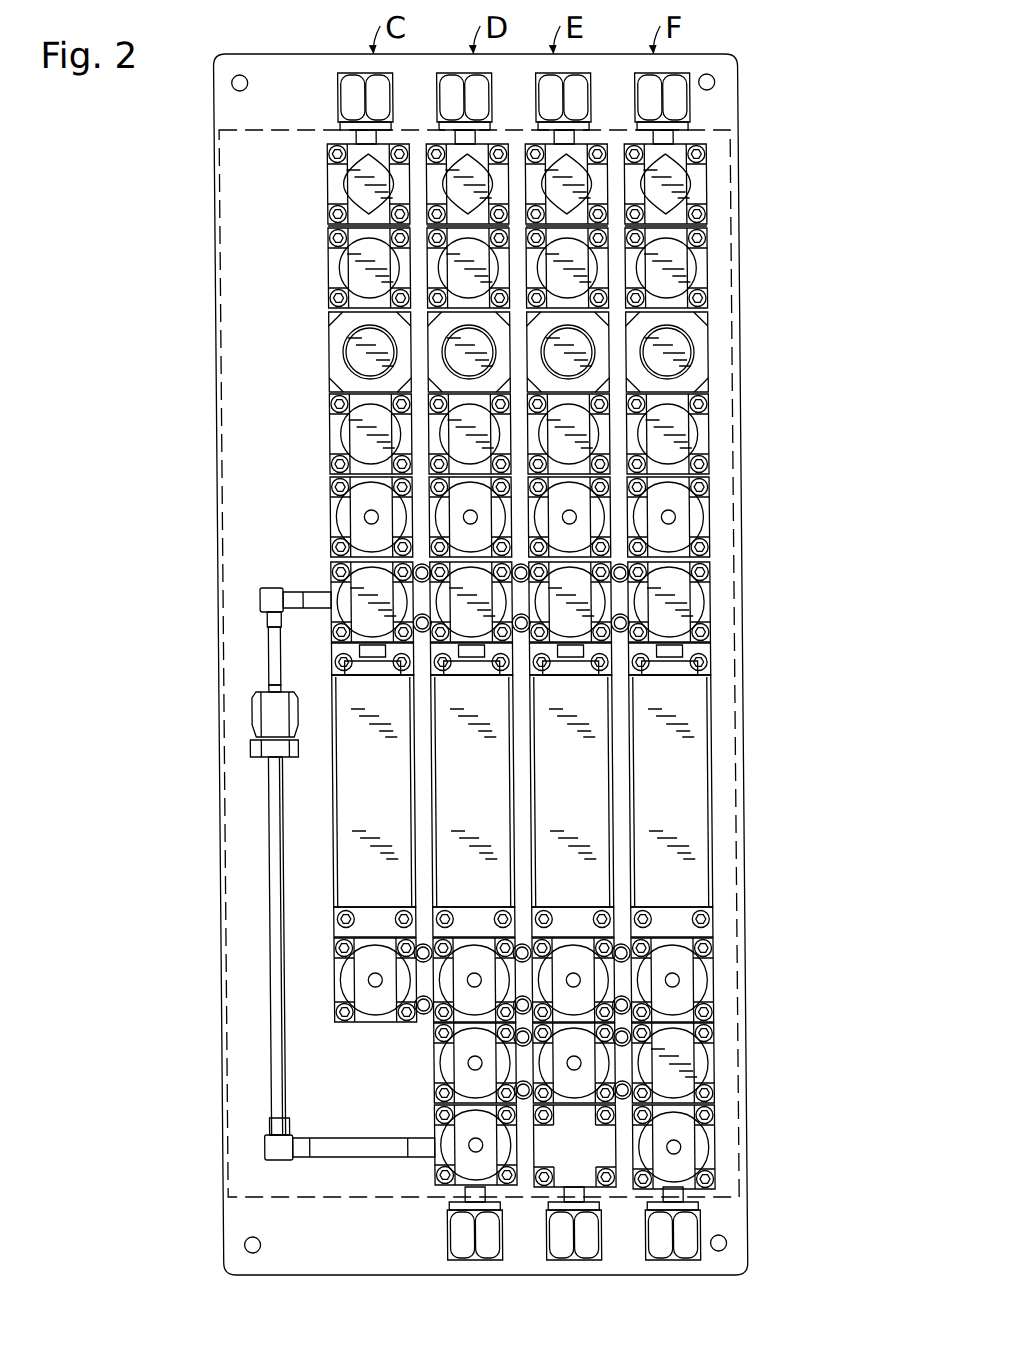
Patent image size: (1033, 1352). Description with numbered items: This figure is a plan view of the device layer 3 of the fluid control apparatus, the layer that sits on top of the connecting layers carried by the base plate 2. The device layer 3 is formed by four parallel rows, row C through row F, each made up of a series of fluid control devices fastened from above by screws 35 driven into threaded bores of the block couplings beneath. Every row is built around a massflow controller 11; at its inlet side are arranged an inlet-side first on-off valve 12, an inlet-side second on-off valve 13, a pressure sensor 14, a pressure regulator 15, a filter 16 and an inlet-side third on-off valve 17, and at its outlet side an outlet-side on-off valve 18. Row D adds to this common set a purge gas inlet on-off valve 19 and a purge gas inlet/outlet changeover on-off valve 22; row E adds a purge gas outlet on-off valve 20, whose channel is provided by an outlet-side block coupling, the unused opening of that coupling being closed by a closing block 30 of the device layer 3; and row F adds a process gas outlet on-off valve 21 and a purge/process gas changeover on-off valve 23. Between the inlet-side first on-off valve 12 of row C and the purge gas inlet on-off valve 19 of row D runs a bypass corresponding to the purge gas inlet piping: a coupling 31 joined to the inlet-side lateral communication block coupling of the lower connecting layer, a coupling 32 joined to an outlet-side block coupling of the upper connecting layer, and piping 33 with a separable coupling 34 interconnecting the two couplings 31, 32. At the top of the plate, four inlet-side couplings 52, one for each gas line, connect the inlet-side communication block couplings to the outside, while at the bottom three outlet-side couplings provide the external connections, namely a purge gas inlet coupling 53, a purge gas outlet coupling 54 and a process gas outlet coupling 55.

The base plate 2 is at (240, 583).
The device layer 3 is at (752, 255).
The massflow controller 11 is at (336, 797).
The inlet-side first on-off valve 12 is at (343, 605).
The inlet-side second on-off valve 13 is at (338, 518).
The pressure sensor 14 is at (343, 436).
The pressure regulator 15 is at (343, 352).
The filter 16 is at (346, 270).
The inlet-side third on-off valve 17 is at (333, 188).
The outlet-side on-off valve 18 is at (338, 980).
The purge gas inlet on-off valve 19 is at (485, 1244).
The purge gas outlet on-off valve 20 is at (590, 1064).
The process gas outlet on-off valve 21 is at (692, 1147).
The purge gas inlet/outlet changeover on-off valve 22 is at (466, 1060).
The purge/process gas changeover on-off valve 23 is at (690, 1054).
The closing block 30 is at (580, 1165).
The coupling 31 is at (313, 598).
The coupling 32 is at (418, 1142).
The piping 33 is at (265, 930).
The separable coupling 34 is at (248, 712).
The screw 35 is at (700, 236).
The inlet-side coupling 52 is at (348, 95).
The purge gas inlet coupling 53 is at (452, 1258).
The purge gas outlet coupling 54 is at (553, 1258).
The process gas outlet coupling 55 is at (672, 1258).